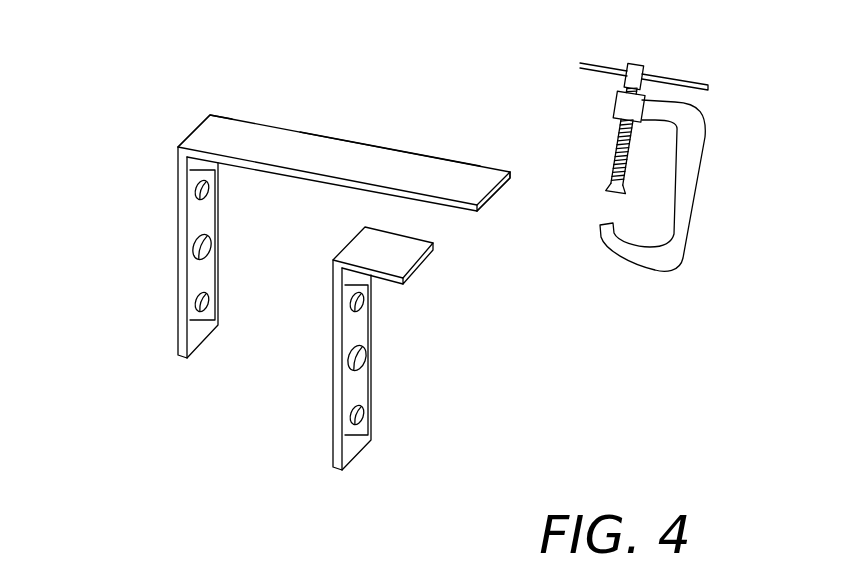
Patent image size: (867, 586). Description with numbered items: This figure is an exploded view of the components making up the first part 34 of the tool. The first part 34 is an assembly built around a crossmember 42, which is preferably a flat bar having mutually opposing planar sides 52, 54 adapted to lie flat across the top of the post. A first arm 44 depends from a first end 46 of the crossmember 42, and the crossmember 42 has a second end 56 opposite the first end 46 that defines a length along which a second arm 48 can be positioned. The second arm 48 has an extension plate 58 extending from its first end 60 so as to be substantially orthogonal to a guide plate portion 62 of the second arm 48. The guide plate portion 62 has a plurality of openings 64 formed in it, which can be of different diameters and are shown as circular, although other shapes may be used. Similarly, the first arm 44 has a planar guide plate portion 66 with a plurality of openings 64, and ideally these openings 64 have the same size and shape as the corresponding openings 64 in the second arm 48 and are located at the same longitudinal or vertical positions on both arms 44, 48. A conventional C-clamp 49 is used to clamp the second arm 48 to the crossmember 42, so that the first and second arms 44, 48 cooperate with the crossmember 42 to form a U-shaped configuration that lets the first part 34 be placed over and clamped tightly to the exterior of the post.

The first part 34 is at (301, 260).
The crossmember 42 is at (350, 143).
The first arm 44 is at (220, 270).
The first end 46 is at (194, 130).
The second arm 48 is at (369, 360).
The C-clamp 49 is at (679, 166).
The planar side 52 is at (422, 180).
The planar side 54 is at (304, 182).
The second end 56 is at (498, 193).
The extension plate 58 is at (420, 267).
The first end 60 is at (350, 241).
The guide plate portion 62 is at (411, 360).
The openings 64 is at (212, 250).
The planar guide plate portion 66 is at (208, 277).